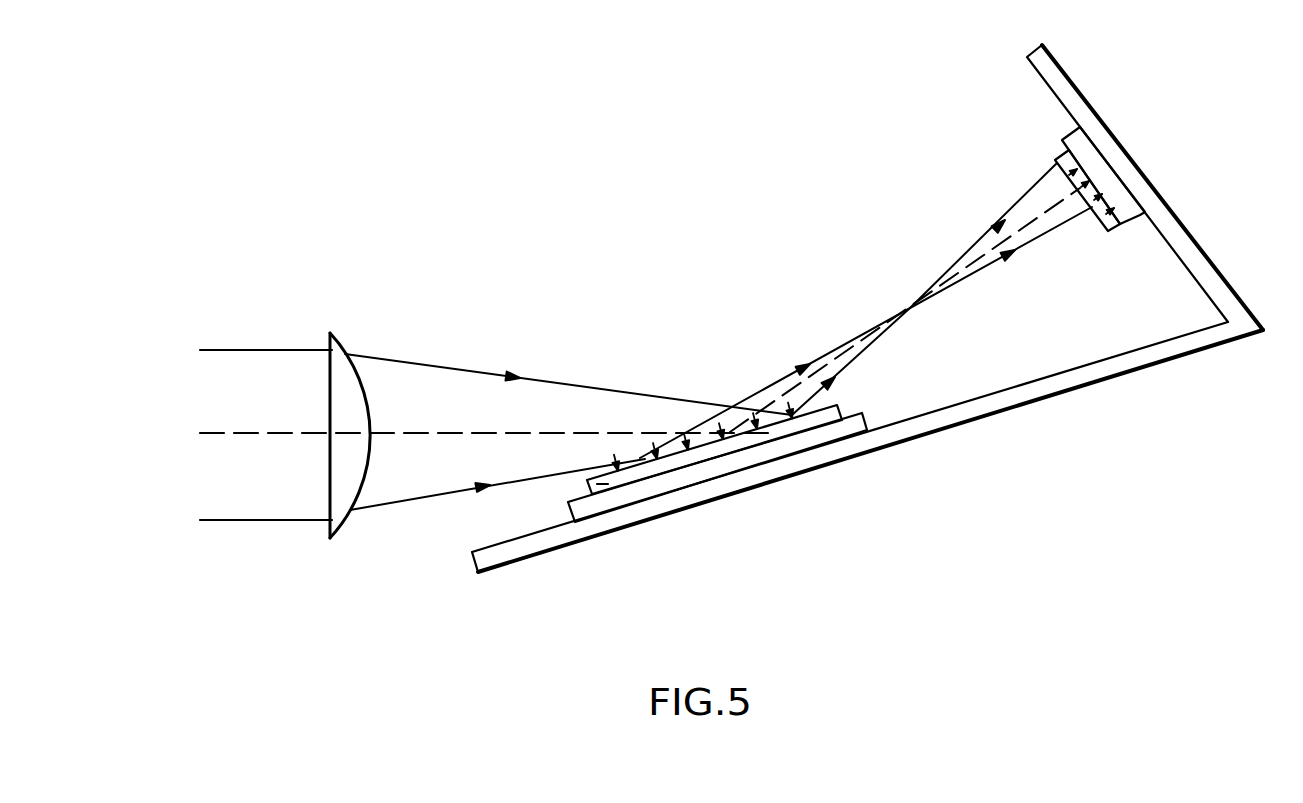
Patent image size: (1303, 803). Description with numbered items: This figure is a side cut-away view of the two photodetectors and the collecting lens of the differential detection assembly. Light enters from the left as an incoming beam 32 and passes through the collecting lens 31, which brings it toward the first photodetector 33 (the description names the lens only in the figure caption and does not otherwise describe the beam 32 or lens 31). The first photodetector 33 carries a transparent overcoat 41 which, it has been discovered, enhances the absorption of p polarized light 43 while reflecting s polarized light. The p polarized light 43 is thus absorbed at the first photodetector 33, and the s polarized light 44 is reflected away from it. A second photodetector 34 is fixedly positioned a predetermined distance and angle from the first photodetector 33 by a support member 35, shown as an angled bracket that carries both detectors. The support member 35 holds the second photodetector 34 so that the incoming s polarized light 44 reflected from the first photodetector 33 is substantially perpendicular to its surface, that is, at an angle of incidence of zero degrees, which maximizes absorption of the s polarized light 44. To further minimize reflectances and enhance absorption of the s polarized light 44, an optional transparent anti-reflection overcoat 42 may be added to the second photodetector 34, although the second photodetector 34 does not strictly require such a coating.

The lens 31 is at (350, 352).
The incident light beam 32 is at (196, 350).
The first photodetector 33 is at (855, 425).
The second photodetector 34 is at (1072, 137).
The support member 35 is at (1233, 330).
The transparent overcoat 41 is at (570, 502).
The anti-reflection overcoat 42 is at (1065, 160).
The p polarized light 43 is at (721, 440).
The s polarized light 44 is at (1077, 188).